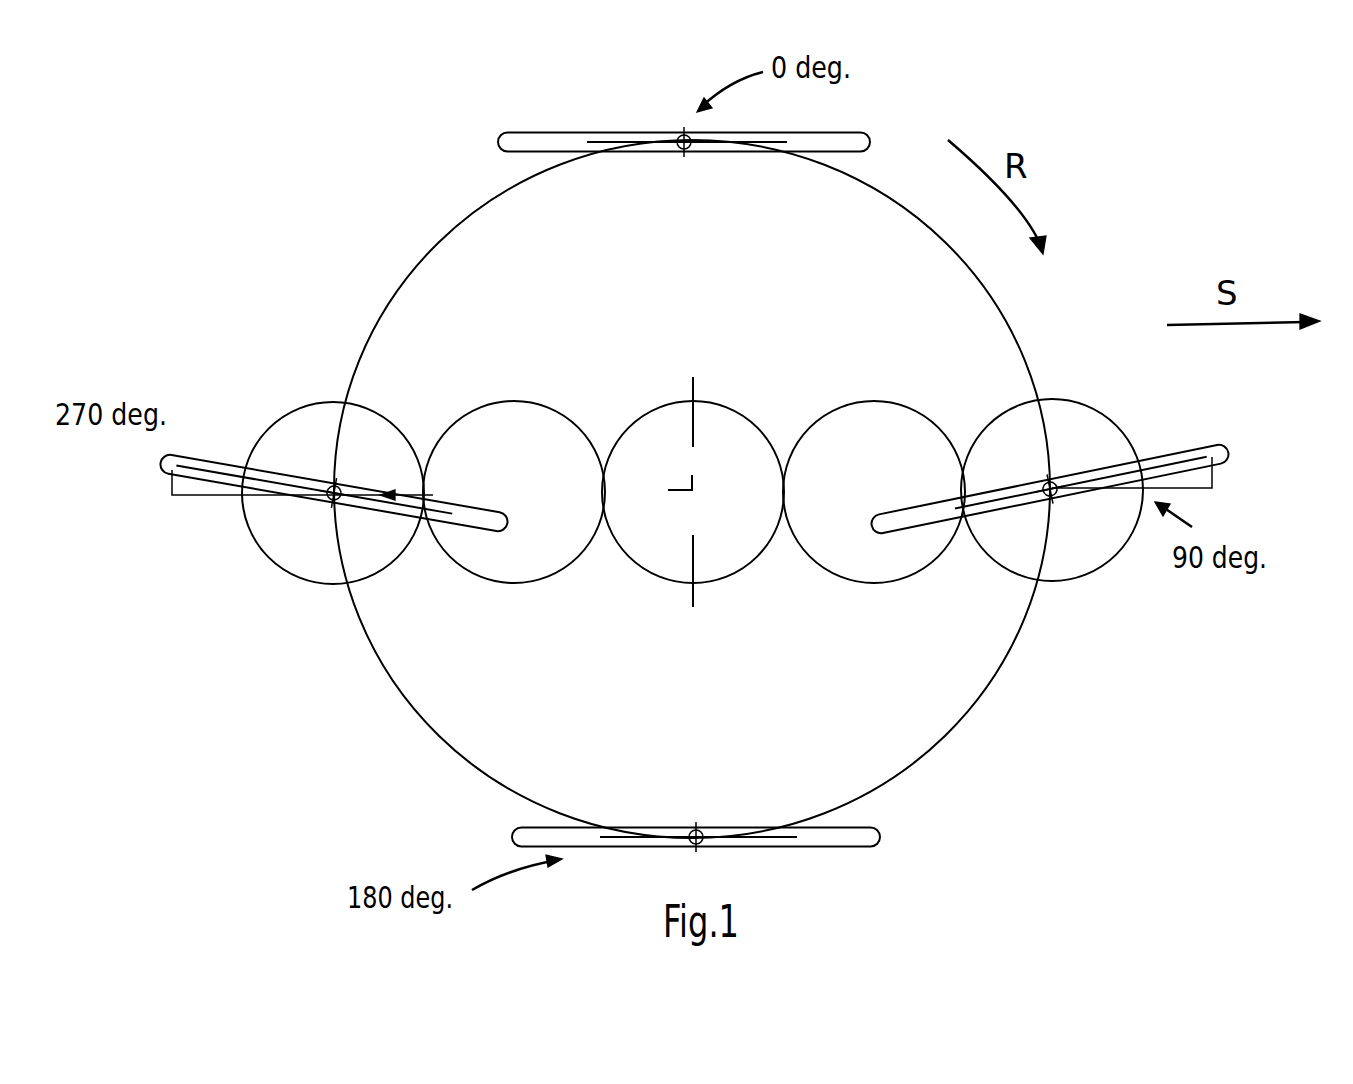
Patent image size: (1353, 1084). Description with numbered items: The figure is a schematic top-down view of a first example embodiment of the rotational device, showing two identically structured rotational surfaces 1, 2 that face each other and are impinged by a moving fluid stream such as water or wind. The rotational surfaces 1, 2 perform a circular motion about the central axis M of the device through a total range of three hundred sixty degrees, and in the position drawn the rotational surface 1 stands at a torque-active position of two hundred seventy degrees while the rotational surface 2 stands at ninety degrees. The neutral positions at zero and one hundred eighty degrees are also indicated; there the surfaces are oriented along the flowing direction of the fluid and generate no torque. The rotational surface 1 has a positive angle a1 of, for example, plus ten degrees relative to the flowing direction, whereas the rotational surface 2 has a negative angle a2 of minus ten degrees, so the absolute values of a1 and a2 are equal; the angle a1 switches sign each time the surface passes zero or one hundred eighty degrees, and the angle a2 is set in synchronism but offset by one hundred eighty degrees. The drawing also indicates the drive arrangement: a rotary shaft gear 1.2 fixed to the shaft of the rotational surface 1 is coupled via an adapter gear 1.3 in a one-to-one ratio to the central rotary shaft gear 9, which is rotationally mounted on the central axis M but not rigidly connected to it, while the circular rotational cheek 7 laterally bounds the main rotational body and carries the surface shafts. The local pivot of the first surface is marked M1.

The rotational surface 1 is at (158, 458).
The rotary shaft gear 1.2 is at (291, 405).
The adapter gear 1.3 is at (480, 420).
The rotational surface 2 is at (1230, 455).
The rotational cheek 7 is at (977, 675).
The central rotary shaft gear 9 is at (628, 427).
The central axis M is at (686, 504).
The centre point of blade 1 M1 is at (309, 524).
The angle of the first rotational surface a1 is at (283, 490).
The angle of the second rotational surface a2 is at (1150, 483).